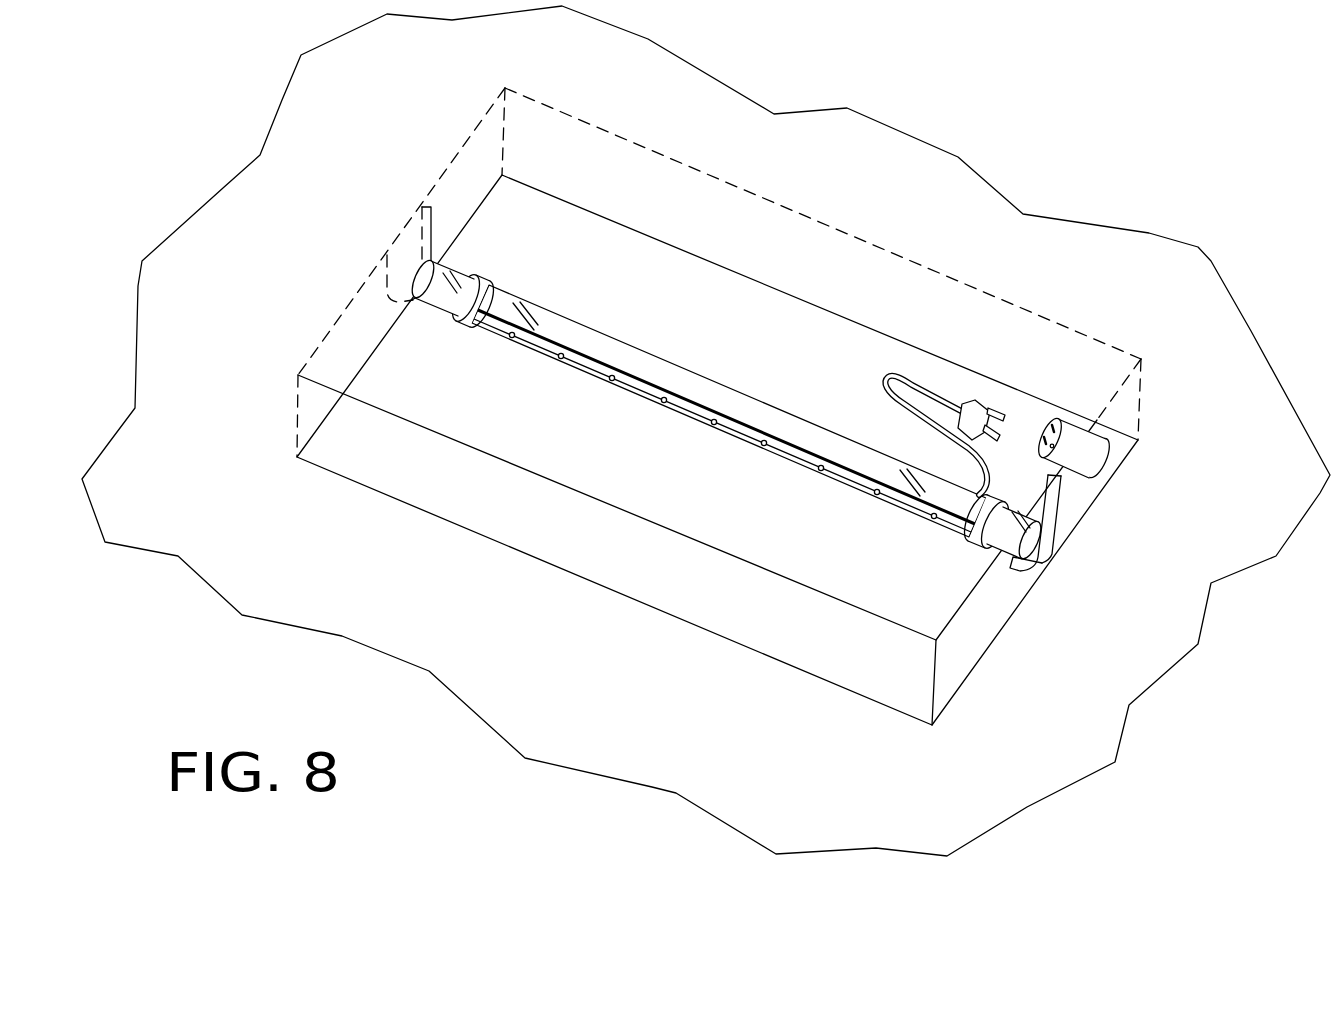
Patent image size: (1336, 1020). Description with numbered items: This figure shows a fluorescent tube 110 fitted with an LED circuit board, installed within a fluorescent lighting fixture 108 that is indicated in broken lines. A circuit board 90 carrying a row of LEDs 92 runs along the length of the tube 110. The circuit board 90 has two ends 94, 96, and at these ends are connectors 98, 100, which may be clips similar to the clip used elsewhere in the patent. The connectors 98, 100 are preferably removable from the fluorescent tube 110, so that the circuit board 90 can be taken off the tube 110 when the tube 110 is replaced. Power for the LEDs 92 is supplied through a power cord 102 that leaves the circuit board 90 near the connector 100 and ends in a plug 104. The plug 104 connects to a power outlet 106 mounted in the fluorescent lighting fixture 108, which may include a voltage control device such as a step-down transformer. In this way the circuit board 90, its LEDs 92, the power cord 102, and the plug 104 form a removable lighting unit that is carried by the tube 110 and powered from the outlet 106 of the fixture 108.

The circuit board 90 is at (727, 397).
The LEDs 92 is at (567, 360).
The end of the circuit board 94 is at (511, 298).
The end of the circuit board 96 is at (966, 523).
The connector 98 is at (451, 323).
The connector 100 is at (975, 538).
The power cord 102 is at (883, 388).
The plug 104 is at (1004, 412).
The power outlet 106 is at (1071, 462).
The fluorescent lighting fixture 108 is at (872, 240).
The fluorescent tube 110 is at (702, 378).